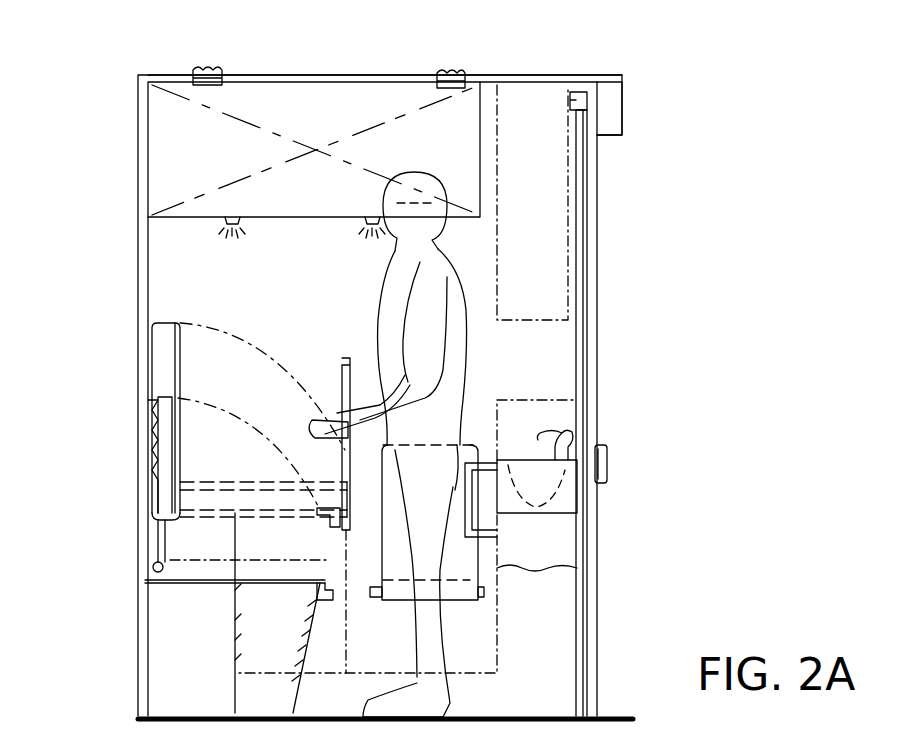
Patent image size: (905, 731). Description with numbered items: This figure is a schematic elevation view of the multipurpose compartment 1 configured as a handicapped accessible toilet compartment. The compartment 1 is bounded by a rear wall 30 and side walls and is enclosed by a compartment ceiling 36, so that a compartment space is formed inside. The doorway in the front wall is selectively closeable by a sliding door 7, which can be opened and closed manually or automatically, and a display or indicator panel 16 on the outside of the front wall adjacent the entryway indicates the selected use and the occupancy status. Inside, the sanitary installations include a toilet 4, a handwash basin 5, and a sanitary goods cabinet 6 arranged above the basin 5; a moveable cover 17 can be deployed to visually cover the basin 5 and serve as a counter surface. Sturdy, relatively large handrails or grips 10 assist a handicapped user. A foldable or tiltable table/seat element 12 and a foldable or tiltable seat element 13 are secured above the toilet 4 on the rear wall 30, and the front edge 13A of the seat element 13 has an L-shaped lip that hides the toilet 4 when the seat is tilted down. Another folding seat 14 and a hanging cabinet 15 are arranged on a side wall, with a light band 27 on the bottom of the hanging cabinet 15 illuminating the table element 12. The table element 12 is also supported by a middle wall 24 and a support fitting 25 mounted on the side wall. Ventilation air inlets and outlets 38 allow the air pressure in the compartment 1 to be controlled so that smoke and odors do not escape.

The multipurpose compartment 1 is at (628, 286).
The toilet 4 is at (248, 627).
The handwash basin 5 is at (537, 477).
The sanitary goods cabinet 6 is at (545, 215).
The sliding door 7 is at (578, 347).
The handrails or grips 10 is at (465, 512).
The table/seat element 12 is at (155, 350).
The seat element 13 is at (155, 468).
The front edge 13A is at (150, 417).
The folding seat 14 is at (463, 557).
The hanging cabinet 15 is at (173, 125).
The display or indicator panel 16 is at (622, 107).
The moveable cover 17 is at (547, 398).
The middle wall 24 is at (190, 540).
The support fitting 25 is at (320, 513).
The light band 27 is at (233, 215).
The rear wall 30 is at (143, 155).
The compartment ceiling 36 is at (487, 80).
The ventilation air inlets and outlets 38 is at (205, 67).